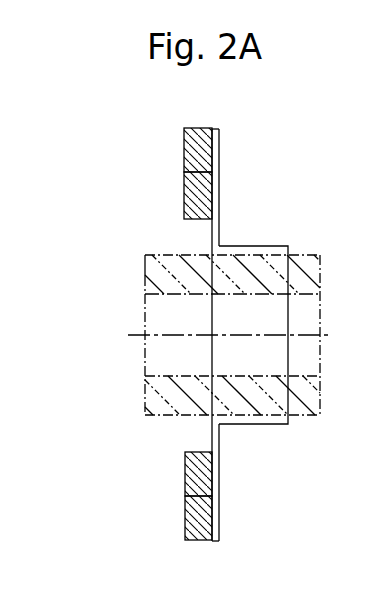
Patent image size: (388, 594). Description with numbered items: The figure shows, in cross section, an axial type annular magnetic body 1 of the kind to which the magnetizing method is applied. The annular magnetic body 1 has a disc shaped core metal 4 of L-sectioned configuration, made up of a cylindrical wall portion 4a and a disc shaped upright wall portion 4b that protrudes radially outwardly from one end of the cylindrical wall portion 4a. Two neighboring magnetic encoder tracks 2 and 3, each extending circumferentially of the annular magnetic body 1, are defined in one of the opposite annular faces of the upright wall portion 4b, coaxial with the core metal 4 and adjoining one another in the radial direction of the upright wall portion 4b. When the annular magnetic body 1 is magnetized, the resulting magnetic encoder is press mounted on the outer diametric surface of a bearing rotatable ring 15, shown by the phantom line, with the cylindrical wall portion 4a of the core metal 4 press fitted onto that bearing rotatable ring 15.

The annular magnetic body 1 is at (272, 165).
The magnetic encoder track 2 is at (184, 191).
The magnetic encoder track 3 is at (184, 150).
The core metal 4 is at (220, 208).
The cylindrical wall portion 4a is at (266, 246).
The upright wall portion 4b is at (220, 158).
The bearing rotatable ring 15 is at (145, 275).